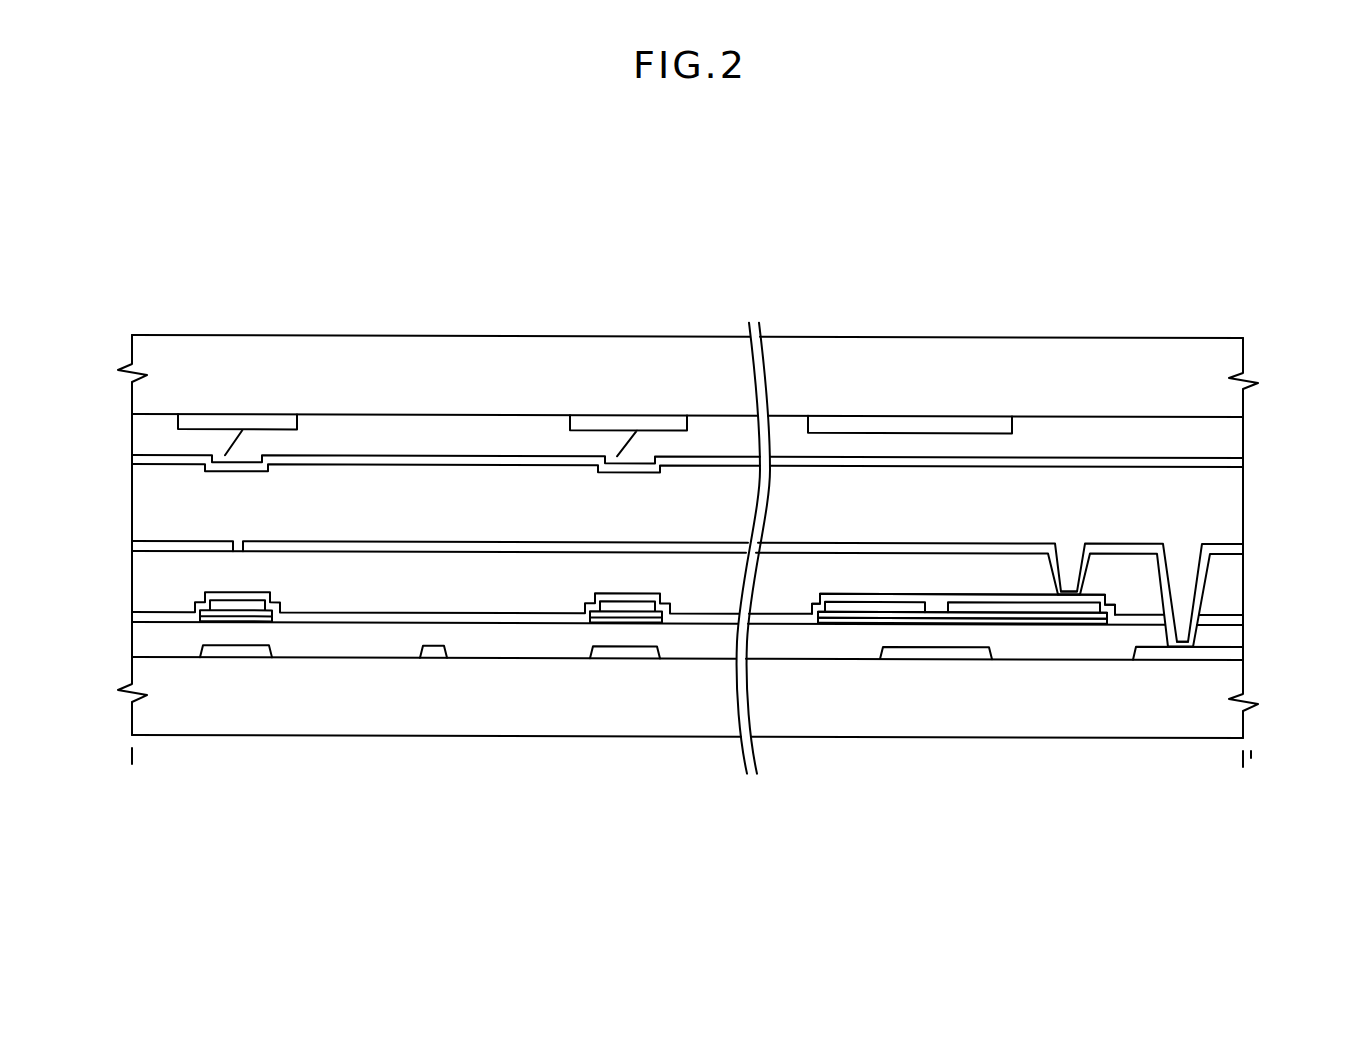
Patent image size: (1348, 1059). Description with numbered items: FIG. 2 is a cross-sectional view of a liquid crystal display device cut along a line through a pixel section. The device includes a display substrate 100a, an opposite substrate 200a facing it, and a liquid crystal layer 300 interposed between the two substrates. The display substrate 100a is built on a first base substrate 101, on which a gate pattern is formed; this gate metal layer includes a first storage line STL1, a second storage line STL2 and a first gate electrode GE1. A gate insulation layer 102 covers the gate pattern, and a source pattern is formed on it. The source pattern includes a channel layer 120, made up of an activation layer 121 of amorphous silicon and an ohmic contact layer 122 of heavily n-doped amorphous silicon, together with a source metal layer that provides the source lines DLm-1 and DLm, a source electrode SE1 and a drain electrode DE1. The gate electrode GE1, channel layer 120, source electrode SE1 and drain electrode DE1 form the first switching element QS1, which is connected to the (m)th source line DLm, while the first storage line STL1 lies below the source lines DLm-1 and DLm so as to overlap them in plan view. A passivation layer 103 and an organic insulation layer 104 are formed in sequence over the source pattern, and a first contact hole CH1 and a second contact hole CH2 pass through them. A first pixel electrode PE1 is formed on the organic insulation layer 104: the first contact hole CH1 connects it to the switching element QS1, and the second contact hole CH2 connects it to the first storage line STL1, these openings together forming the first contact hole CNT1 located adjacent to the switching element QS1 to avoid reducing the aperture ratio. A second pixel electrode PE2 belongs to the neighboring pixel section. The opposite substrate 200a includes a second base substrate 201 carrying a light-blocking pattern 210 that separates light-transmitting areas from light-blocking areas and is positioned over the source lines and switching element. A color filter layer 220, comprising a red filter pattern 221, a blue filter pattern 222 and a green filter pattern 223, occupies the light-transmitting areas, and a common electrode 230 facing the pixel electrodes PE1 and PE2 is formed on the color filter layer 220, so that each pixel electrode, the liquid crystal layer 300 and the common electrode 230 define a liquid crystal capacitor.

The second base substrate 201 is at (1232, 386).
The light-blocking pattern 210 is at (907, 426).
The color filter layer 220 is at (1232, 433).
The red filter pattern 221 is at (432, 425).
The blue filter pattern 222 is at (160, 426).
The green filter pattern 223 is at (700, 427).
The common electrode 230 is at (1235, 462).
The opposite substrate 200a is at (119, 340).
The liquid crystal layer 300 is at (119, 466).
The display substrate 100a is at (119, 552).
The first base substrate 101 is at (1233, 711).
The gate insulation layer 102 is at (1233, 638).
The passivation layer 103 is at (1233, 614).
The organic insulation layer 104 is at (1233, 583).
The channel layer 120 is at (1035, 815).
The activation layer 121 is at (1048, 622).
The ohmic contact layer 122 is at (1093, 614).
The first pixel electrode PE1 is at (433, 544).
The second pixel electrode PE2 is at (181, 544).
The first storage line STL1 is at (435, 652).
The second storage line STL2 is at (225, 650).
The (m)th source line DLm is at (628, 606).
The (m-1)th source line DLm-1 is at (237, 606).
The source electrode SE1 is at (853, 609).
The first gate electrode GE1 is at (932, 652).
The drain electrode DE1 is at (1002, 607).
The first switching element QS1 is at (1015, 815).
The first contact hole CNT1 is at (1200, 505).
The first contact hole CH1 is at (1075, 569).
The second contact hole CH2 is at (1190, 569).